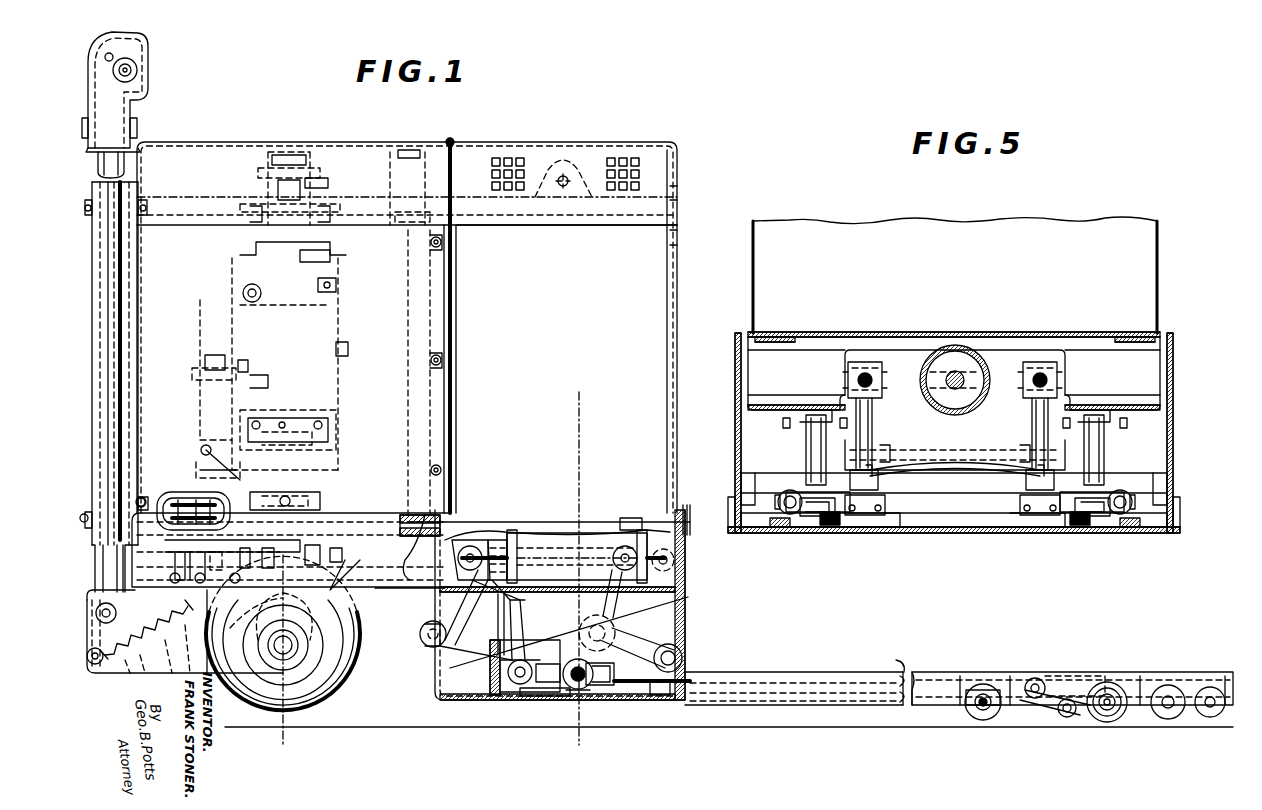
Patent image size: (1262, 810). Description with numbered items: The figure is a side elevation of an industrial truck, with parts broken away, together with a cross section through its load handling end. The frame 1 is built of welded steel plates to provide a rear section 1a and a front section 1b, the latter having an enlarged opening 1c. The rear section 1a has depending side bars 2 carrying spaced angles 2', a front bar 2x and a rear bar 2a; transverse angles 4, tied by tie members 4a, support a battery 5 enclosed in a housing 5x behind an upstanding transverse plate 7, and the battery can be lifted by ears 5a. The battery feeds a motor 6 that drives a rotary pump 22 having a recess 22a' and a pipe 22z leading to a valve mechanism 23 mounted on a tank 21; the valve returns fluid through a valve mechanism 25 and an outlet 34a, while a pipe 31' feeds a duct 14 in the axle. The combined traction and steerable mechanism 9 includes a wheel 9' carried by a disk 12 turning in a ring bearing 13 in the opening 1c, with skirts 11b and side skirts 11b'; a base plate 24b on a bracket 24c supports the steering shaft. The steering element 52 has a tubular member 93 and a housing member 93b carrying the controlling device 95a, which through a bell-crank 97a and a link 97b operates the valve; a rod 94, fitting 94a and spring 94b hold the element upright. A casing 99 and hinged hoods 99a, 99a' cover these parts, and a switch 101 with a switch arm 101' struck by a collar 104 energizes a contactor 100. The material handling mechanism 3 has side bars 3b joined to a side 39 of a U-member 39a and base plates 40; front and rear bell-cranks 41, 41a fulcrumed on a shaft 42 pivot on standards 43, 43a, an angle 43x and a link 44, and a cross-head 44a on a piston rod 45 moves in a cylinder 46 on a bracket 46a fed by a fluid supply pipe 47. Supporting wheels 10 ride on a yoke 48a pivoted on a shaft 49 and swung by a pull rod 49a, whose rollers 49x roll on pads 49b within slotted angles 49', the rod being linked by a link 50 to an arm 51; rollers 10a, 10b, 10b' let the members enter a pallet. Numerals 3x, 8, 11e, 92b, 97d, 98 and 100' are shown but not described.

In FIG. 1, the frame 1 is at (398, 580).
In FIG. 1, the rear frame section 1a is at (575, 605).
In FIG. 5, the rear frame section 1a is at (811, 384).
In FIG. 1, the front frame section 1b is at (404, 586).
In FIG. 1, the enlarged opening 1c is at (415, 515).
In FIG. 5, the side bars 2 is at (969, 373).
In FIG. 1, the angles 2' is at (583, 630).
In FIG. 5, the angles 2' is at (967, 458).
In FIG. 1, the rear bar 2a is at (692, 505).
In FIG. 1, the front bar 2x is at (430, 573).
In FIG. 1, the material handling mechanism 3 is at (1072, 677).
In FIG. 1, the side bars 3b is at (826, 700).
In FIG. 5, the side bars 3b is at (1178, 528).
In FIG. 1, the coupling 3x is at (680, 545).
In FIG. 1, the angles 4 is at (410, 522).
In FIG. 5, the tie members 4a is at (782, 348).
In FIG. 1, the battery 5 is at (570, 746).
In FIG. 1, the ears 5a is at (582, 168).
In FIG. 5, the ears 5a is at (830, 224).
In FIG. 1, the housing 5x is at (660, 312).
In FIG. 1, the motor 6 is at (340, 370).
In FIG. 1, the transverse plate 7 is at (450, 470).
In FIG. 1, the fastening bolt 8 is at (440, 244).
In FIG. 1, the combined traction and steerable mechanism 9 is at (283, 633).
In FIG. 1, the wheel 9' is at (363, 699).
In FIG. 1, the supporting wheels 10 is at (1104, 722).
In FIG. 1, the roller 10a is at (978, 720).
In FIG. 1, the roller 10b is at (1163, 721).
In FIG. 1, the roller 10b' is at (1208, 722).
In FIG. 1, the skirts 11b is at (268, 590).
In FIG. 1, the side skirts 11b' is at (163, 649).
In FIG. 1, the plate 11e is at (106, 676).
In FIG. 1, the disk 12 is at (355, 499).
In FIG. 1, the ring bearing 13 is at (455, 480).
In FIG. 1, the duct 14 is at (405, 512).
In FIG. 1, the tank 21 is at (335, 286).
In FIG. 1, the rotary pump 22 is at (320, 478).
In FIG. 1, the recess 22a' is at (288, 416).
In FIG. 1, the pipe 22z is at (196, 465).
In FIG. 1, the valve mechanism 23 is at (240, 258).
In FIG. 1, the base plate 24b is at (248, 225).
In FIG. 1, the bracket 24c is at (350, 222).
In FIG. 1, the valve mechanism 25 is at (338, 350).
In FIG. 1, the pipe 31' is at (214, 350).
In FIG. 1, the outlet 34a is at (252, 388).
In FIG. 5, the side 39 is at (735, 445).
In FIG. 1, the U-member 39a is at (686, 614).
In FIG. 1, the base plate 40 is at (470, 704).
In FIG. 5, the base plate 40 is at (878, 527).
In FIG. 1, the front bell-crank 41 is at (485, 655).
In FIG. 5, the front bell-crank 41 is at (872, 425).
In FIG. 1, the rear bell-crank 41a is at (662, 648).
In FIG. 1, the shaft 42 is at (430, 645).
In FIG. 5, the shaft 42 is at (966, 455).
In FIG. 1, the standard 43 is at (508, 700).
In FIG. 1, the standard 43a is at (660, 695).
In FIG. 5, the standard 43a is at (890, 497).
In FIG. 1, the angle 43x is at (492, 700).
In FIG. 5, the angle 43x is at (754, 470).
In FIG. 1, the link 44 is at (557, 560).
In FIG. 5, the link 44 is at (866, 368).
In FIG. 1, the cross-head 44a is at (494, 540).
In FIG. 5, the cross-head 44a is at (912, 395).
In FIG. 5, the piston rod 45 is at (963, 372).
In FIG. 1, the cylinder 46 is at (540, 573).
In FIG. 5, the cylinder 46 is at (948, 343).
In FIG. 1, the bracket 46a is at (688, 568).
In FIG. 1, the fluid supply pipe 47 is at (315, 182).
In FIG. 1, the yoke 48a is at (1076, 673).
In FIG. 1, the shaft 49 is at (1055, 683).
In FIG. 5, the angles 49' is at (956, 484).
In FIG. 1, the pull rod 49a is at (870, 680).
In FIG. 1, the pads 49b is at (548, 690).
In FIG. 5, the pads 49b is at (830, 527).
In FIG. 1, the rollers 49x is at (585, 690).
In FIG. 5, the rollers 49x is at (780, 490).
In FIG. 1, the link 50 is at (540, 662).
In FIG. 5, the link 50 is at (815, 520).
In FIG. 1, the arm 51 is at (522, 640).
In FIG. 5, the arm 51 is at (806, 453).
In FIG. 1, the steering element 52 is at (90, 335).
In FIG. 1, the gear 92b is at (225, 560).
In FIG. 1, the tubular member 93 is at (122, 288).
In FIG. 1, the housing member 93b is at (150, 92).
In FIG. 1, the rod 94 is at (130, 676).
In FIG. 1, the fitting 94a is at (170, 644).
In FIG. 1, the spring 94b is at (153, 676).
In FIG. 1, the controlling device 95a is at (140, 68).
In FIG. 1, the bell-crank 97a is at (146, 629).
In FIG. 1, the link 97b is at (256, 613).
In FIG. 1, the spring pin 97d is at (167, 611).
In FIG. 1, the brake 98 is at (290, 570).
In FIG. 1, the casing 99 is at (245, 321).
In FIG. 1, the hood 99a is at (407, 327).
In FIG. 1, the hood 99a' is at (567, 234).
In FIG. 1, the contactor 100 is at (447, 311).
In FIG. 1, the trailer post 100' is at (993, 671).
In FIG. 1, the switch 101 is at (182, 510).
In FIG. 1, the switch arm 101' is at (203, 467).
In FIG. 1, the collar 104 is at (240, 500).